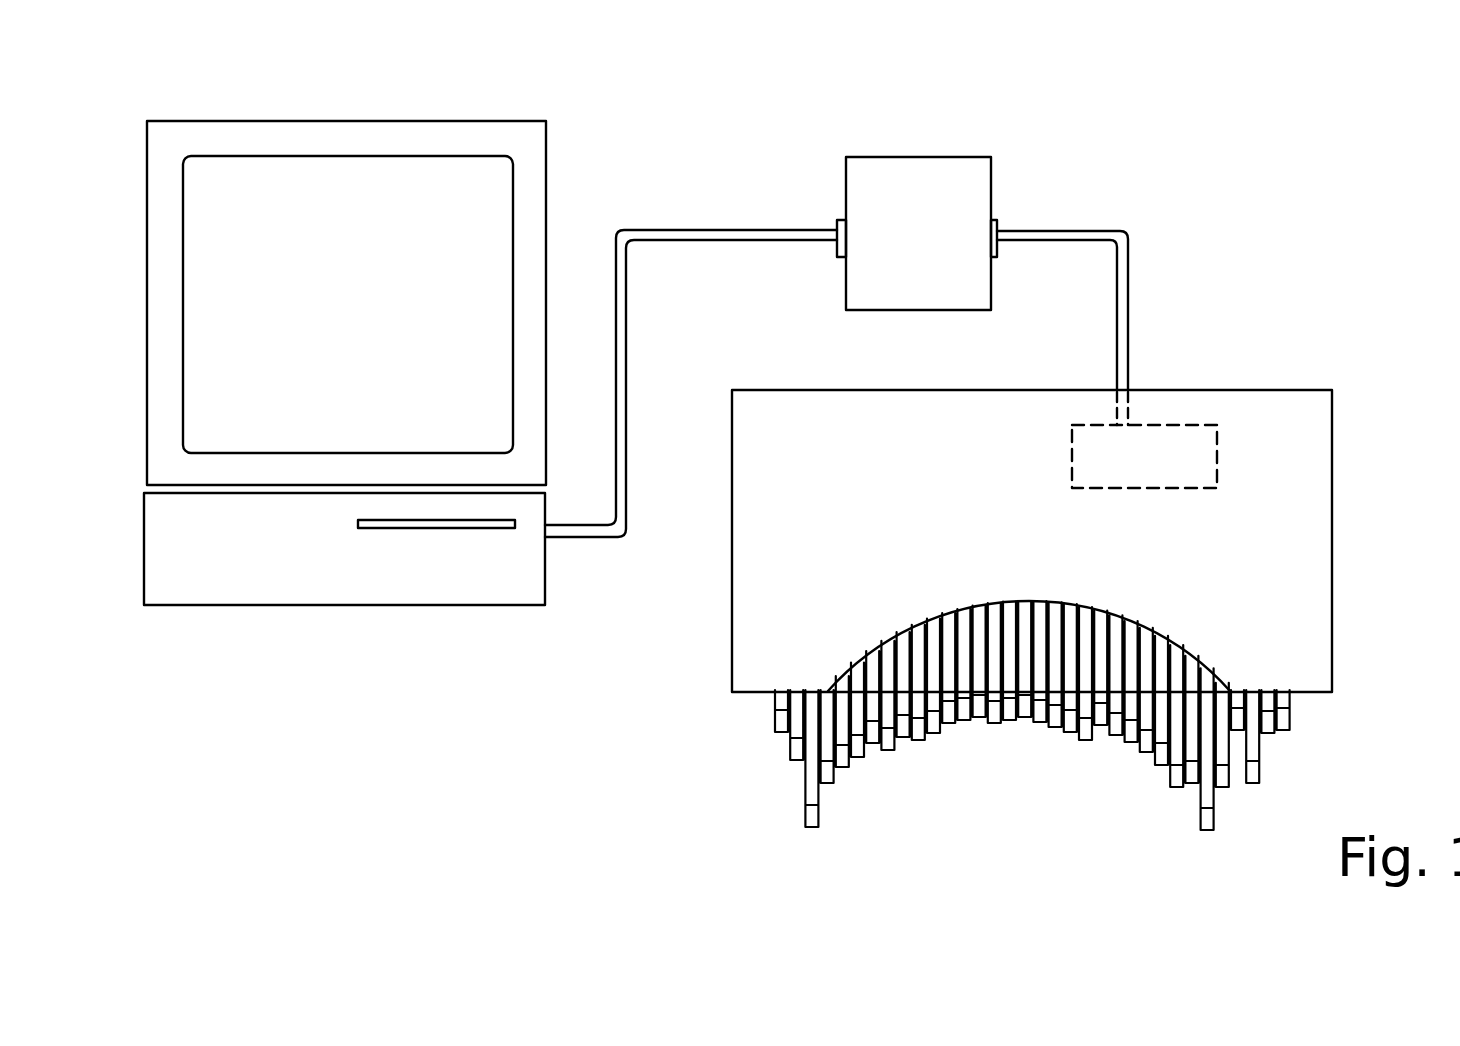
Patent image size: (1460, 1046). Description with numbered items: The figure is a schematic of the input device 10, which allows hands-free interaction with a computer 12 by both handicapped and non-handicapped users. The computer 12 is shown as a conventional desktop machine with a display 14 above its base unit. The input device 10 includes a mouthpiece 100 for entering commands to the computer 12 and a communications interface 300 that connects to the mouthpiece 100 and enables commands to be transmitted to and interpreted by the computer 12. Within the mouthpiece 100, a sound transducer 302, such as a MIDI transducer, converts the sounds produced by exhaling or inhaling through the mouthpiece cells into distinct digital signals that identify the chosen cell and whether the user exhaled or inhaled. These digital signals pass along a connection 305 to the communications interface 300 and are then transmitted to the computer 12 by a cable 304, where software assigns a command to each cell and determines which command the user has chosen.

The input device 10 is at (1037, 98).
The computer 12 is at (433, 628).
The monitor / display 14 is at (558, 133).
The mouthpiece 100 is at (987, 515).
The communications interface 300 is at (918, 233).
The sound transducer 302 is at (1193, 433).
The cable 304 is at (672, 230).
The cable 305 is at (1128, 345).